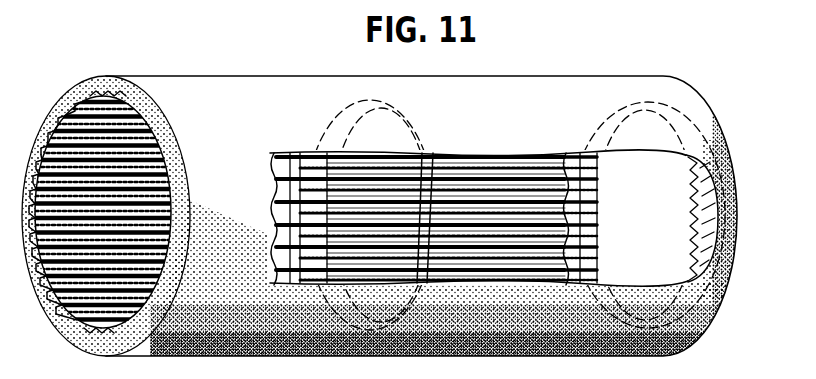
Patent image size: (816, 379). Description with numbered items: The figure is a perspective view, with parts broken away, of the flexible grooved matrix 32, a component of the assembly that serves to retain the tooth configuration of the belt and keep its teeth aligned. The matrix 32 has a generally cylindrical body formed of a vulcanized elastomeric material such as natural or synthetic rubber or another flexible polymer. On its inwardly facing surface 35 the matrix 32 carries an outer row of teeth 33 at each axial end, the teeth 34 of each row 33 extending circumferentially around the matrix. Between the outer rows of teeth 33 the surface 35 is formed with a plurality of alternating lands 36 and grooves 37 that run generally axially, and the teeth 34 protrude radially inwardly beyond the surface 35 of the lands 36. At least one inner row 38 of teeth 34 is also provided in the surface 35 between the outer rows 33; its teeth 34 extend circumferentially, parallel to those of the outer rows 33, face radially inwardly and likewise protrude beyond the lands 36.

The flexible grooved matrix 32 is at (112, 70).
The outer row of teeth 33 is at (73, 312).
The teeth 34 is at (50, 280).
The inwardly facing surface 35 is at (117, 152).
The lands 36 is at (146, 158).
The grooves 37 is at (167, 183).
The inner row of teeth 38 is at (312, 152).